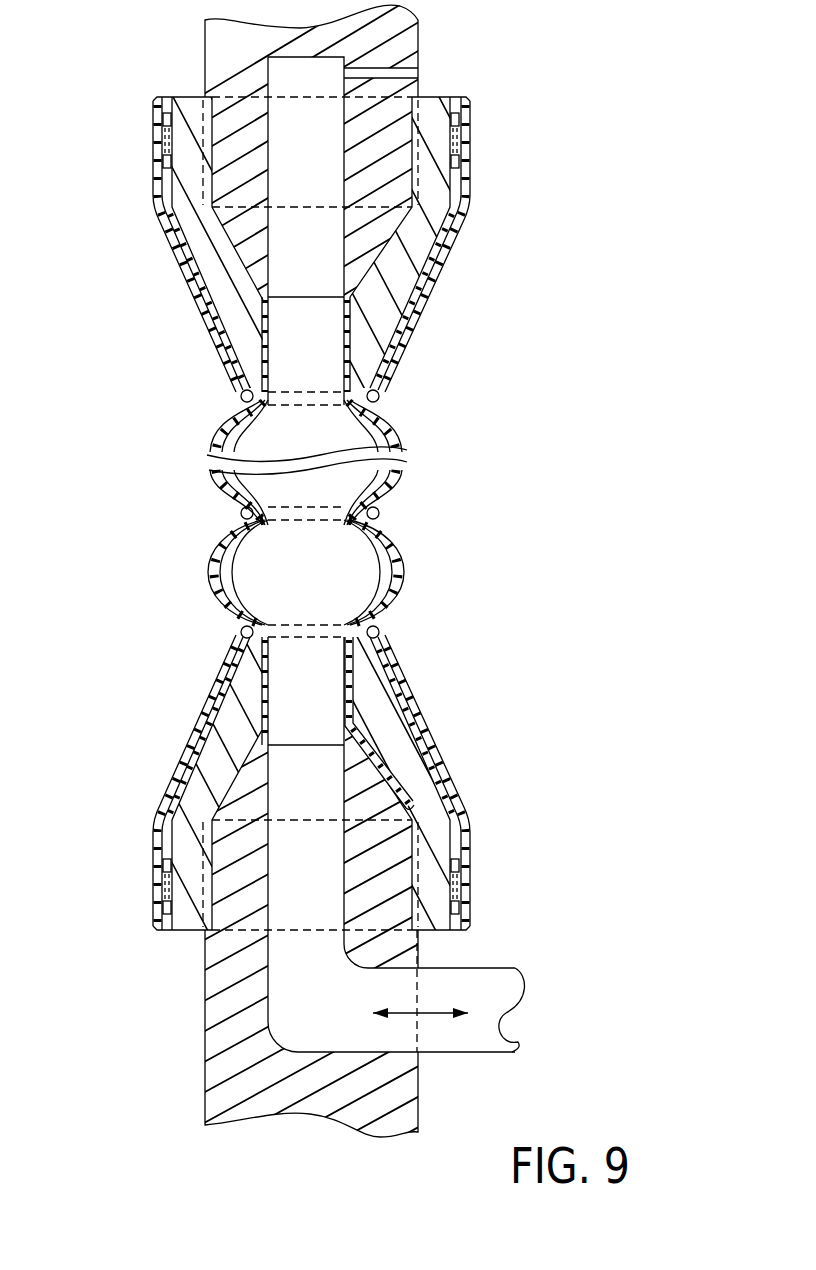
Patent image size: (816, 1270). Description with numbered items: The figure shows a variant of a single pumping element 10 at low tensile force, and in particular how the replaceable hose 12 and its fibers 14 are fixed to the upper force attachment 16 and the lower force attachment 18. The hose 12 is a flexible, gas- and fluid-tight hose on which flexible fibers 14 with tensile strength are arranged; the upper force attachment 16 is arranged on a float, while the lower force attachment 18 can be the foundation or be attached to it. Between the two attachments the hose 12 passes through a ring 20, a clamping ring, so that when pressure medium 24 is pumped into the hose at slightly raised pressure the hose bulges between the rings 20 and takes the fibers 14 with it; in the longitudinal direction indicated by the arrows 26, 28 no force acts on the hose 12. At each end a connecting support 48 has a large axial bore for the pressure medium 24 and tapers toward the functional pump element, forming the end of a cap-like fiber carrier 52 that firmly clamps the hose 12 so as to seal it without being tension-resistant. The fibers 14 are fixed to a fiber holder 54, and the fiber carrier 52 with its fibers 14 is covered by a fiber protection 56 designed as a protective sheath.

The pumping element 10 is at (156, 532).
The hose 12 is at (397, 556).
The fibers 14 is at (398, 590).
The upper force attachment 16 is at (118, 172).
The lower force attachment 18 is at (110, 912).
The ring 20 is at (388, 512).
The pressure medium 24 is at (232, 582).
The arrow 26 is at (457, 990).
The arrow 28 is at (433, 1012).
The connecting support 48 is at (410, 33).
The fiber carrier 52 is at (413, 253).
The fiber holder 54 is at (459, 143).
The fiber protection 56 is at (415, 318).